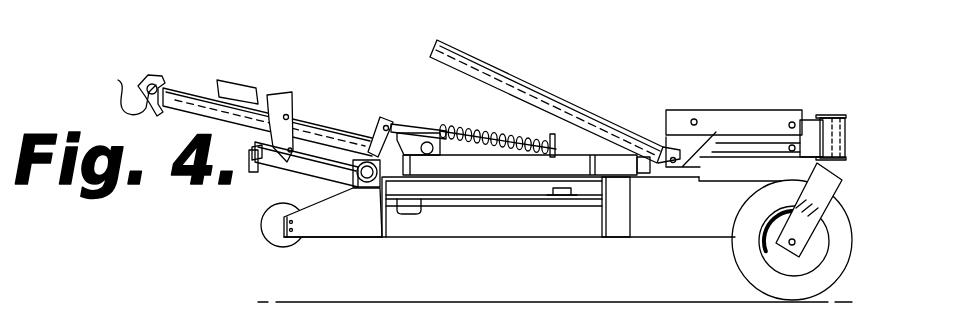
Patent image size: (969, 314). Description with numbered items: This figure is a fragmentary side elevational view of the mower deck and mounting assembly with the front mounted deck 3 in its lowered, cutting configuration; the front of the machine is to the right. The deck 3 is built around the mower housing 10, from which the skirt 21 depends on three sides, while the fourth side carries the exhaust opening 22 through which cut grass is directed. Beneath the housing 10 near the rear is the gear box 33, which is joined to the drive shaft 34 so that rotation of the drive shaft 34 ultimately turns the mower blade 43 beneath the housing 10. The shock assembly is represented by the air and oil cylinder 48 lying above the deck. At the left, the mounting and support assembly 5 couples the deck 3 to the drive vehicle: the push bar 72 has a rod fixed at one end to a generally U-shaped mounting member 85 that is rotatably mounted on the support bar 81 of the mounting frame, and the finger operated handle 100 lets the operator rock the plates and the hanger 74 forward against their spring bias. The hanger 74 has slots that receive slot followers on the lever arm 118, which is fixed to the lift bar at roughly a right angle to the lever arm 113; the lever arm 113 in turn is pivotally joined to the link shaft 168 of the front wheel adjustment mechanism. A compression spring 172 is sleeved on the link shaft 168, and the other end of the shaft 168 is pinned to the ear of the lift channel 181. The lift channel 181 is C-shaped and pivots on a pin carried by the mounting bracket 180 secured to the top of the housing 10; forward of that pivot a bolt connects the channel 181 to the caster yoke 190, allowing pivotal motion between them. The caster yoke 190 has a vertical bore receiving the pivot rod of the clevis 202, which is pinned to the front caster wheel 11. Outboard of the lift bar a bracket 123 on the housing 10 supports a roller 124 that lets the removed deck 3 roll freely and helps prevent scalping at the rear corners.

The front mounted deck 3 is at (667, 238).
The mounting and support assembly 5 is at (322, 84).
The mower housing 10 is at (560, 227).
The front caster wheel 11 is at (853, 241).
The skirt 21 is at (707, 224).
The exhaust opening 22 is at (598, 226).
The gear box 33 is at (413, 194).
The drive shaft 34 is at (266, 160).
The mower blade 43 is at (505, 208).
The air and oil cylinder 48 is at (560, 90).
The push bar 72 is at (186, 88).
The hanger 74 is at (255, 160).
The support bar 81 is at (118, 80).
The U-shaped mounting member 85 is at (151, 76).
The finger operated handle 100 is at (296, 93).
The lever arm 113 is at (376, 140).
The lever arm 118 is at (321, 181).
The bracket 123 is at (365, 228).
The roller 124 is at (279, 243).
The link shaft 168 is at (414, 126).
The compression spring 172 is at (489, 134).
The mounting bracket 180 is at (697, 166).
The lift channel 181 is at (754, 109).
The caster yoke 190 is at (847, 136).
The clevis 202 is at (843, 182).